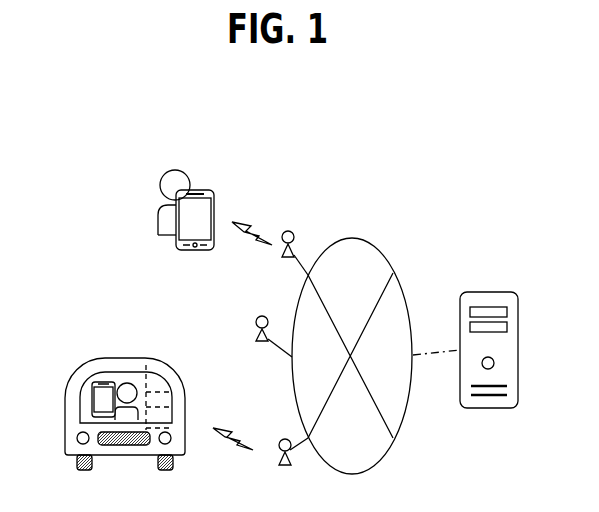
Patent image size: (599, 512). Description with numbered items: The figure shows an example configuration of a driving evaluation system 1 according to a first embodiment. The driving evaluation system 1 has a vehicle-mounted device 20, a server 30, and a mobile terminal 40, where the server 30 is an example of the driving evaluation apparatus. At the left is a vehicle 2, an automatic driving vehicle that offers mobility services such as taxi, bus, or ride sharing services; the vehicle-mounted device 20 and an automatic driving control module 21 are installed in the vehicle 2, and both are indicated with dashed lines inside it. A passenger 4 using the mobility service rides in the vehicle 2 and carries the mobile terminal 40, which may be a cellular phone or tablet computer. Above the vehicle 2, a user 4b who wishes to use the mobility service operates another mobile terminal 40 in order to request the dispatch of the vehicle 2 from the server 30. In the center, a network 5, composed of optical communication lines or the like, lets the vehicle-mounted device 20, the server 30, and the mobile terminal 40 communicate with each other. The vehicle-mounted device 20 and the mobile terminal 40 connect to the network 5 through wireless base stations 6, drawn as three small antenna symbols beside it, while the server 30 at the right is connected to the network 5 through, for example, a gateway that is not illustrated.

The driving evaluation system 1 is at (463, 186).
The vehicle 2 is at (65, 437).
The passenger 4 is at (127, 383).
The user 4b is at (168, 185).
The network 5 is at (352, 238).
The wireless base station 6 is at (288, 231).
The vehicle-mounted device 20 is at (176, 413).
The automatic driving control module 21 is at (176, 378).
The server 30 is at (488, 292).
The mobile terminal 40 is at (92, 395).